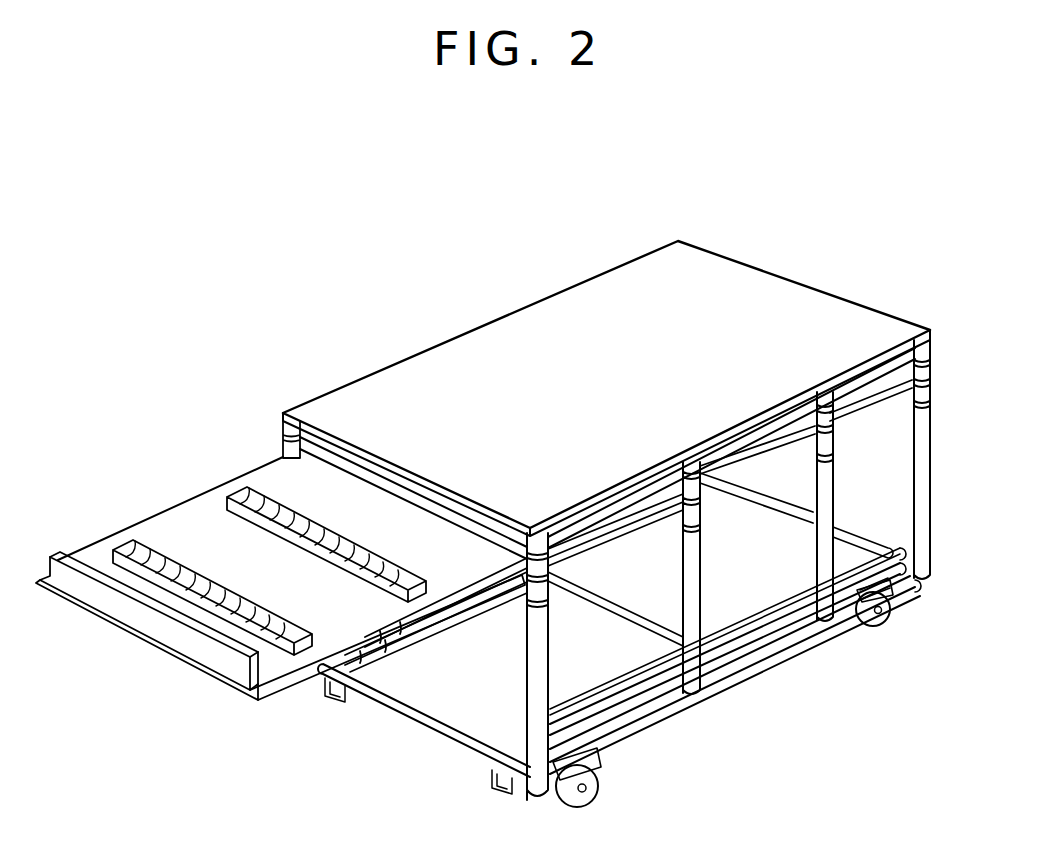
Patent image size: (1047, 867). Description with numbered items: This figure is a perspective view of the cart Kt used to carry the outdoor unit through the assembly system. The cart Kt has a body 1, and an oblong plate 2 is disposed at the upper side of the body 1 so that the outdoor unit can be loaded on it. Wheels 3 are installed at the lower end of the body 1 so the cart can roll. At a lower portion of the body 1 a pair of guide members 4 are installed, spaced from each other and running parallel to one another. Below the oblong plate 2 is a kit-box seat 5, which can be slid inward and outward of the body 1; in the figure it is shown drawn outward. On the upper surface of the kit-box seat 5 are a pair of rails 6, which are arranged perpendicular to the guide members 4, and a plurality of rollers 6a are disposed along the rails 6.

The cart Kt is at (452, 225).
The body 1 is at (935, 464).
The oblong plate 2 is at (797, 298).
The wheels 3 is at (882, 623).
The guide members 4 is at (486, 765).
The kit-box seat 5 is at (192, 518).
The rails 6 is at (269, 602).
The rollers 6a is at (237, 657).